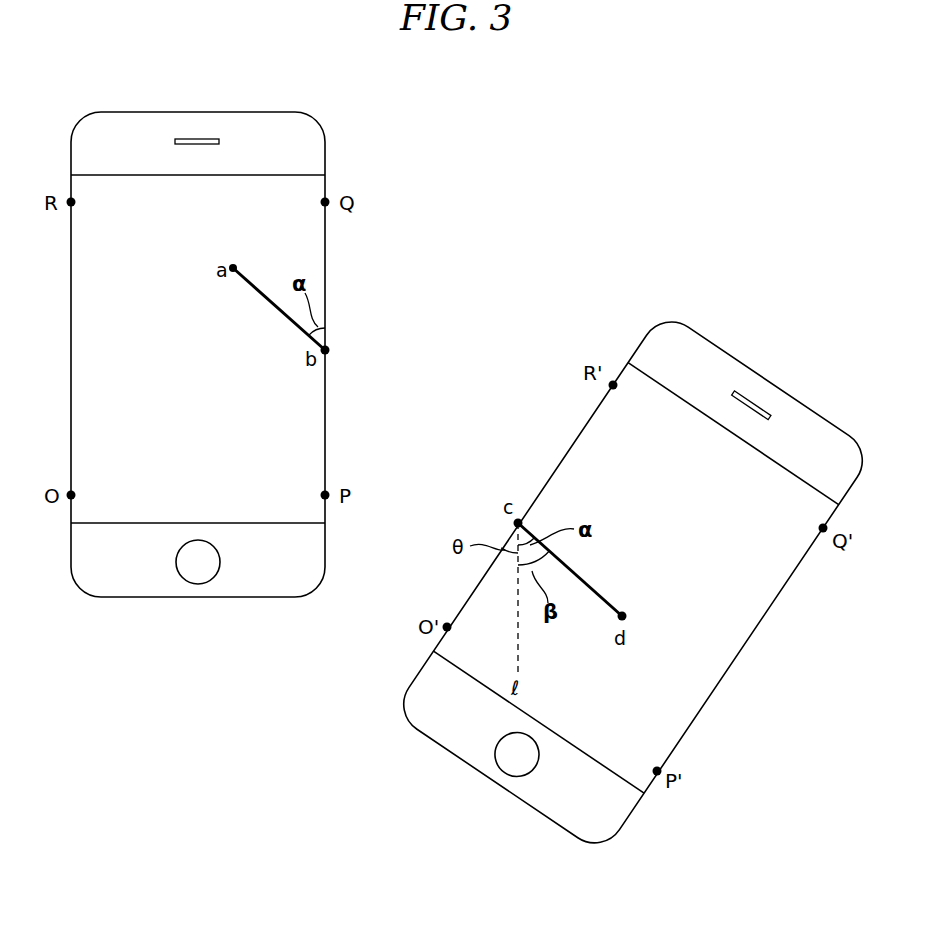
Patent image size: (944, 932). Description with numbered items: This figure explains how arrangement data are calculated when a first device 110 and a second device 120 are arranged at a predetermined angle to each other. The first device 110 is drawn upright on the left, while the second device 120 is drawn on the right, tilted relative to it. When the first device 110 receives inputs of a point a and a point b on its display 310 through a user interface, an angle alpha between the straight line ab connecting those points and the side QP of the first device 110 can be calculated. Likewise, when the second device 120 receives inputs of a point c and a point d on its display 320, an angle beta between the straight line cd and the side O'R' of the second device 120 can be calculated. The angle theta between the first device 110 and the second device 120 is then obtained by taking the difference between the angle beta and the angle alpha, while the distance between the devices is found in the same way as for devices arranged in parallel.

The first device 110 is at (233, 111).
The display 310 is at (270, 175).
The second device 120 is at (671, 322).
The display 320 is at (794, 472).